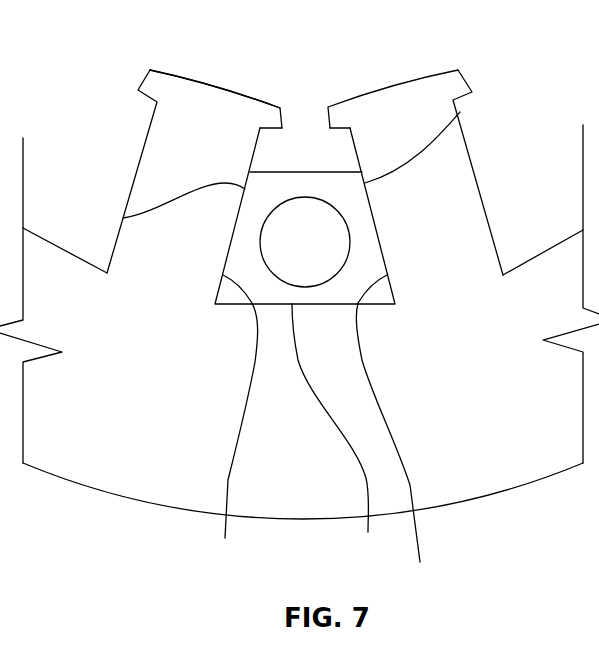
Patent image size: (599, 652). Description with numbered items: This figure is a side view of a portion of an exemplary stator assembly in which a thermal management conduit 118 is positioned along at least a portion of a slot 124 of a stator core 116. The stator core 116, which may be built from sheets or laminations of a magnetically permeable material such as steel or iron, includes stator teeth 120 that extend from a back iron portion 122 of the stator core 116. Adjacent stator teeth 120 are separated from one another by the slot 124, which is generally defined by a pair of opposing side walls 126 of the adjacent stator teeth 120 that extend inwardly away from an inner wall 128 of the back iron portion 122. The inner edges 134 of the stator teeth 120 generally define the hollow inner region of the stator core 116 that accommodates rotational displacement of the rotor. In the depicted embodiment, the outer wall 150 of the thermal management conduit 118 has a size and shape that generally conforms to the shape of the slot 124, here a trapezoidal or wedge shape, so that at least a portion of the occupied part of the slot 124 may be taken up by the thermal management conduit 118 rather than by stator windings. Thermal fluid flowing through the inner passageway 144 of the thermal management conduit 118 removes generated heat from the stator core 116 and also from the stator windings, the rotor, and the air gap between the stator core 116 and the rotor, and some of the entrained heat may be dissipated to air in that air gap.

The stator core 116 is at (453, 485).
The thermal management conduit 118 is at (337, 183).
The stator teeth 120 is at (150, 172).
The back iron portion 122 is at (153, 485).
The slot 124 is at (297, 140).
The side walls 126 is at (147, 127).
The inner wall 128 is at (340, 434).
The inner edges 134 is at (208, 92).
The inner passageway 144 is at (286, 254).
The outer wall 150 is at (323, 433).